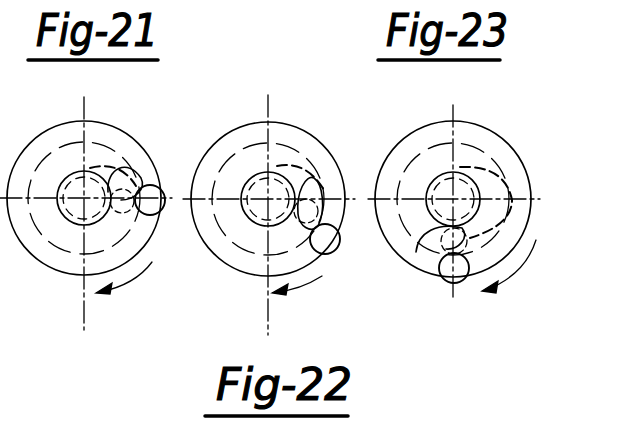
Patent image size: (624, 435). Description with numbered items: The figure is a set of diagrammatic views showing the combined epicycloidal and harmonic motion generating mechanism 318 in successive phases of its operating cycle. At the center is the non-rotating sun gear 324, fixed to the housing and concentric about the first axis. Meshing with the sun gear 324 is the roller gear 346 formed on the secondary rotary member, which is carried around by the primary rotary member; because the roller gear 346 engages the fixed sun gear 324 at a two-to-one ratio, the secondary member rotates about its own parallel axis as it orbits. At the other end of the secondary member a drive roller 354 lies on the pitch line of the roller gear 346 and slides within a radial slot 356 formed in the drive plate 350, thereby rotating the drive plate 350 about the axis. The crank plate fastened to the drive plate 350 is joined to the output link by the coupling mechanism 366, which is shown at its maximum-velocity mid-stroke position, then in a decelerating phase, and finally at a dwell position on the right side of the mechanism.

In FIG. 21, the combined epicycloidal and harmonic motion generating mechanism 318 is at (44, 108).
In FIG. 22, the combined epicycloidal and harmonic motion generating mechanism 318 is at (316, 114).
In FIG. 23, the combined epicycloidal and harmonic motion generating mechanism 318 is at (392, 97).
In FIG. 21, the sun gear 324 is at (55, 233).
In FIG. 22, the sun gear 324 is at (250, 174).
In FIG. 23, the sun gear 324 is at (458, 176).
In FIG. 21, the roller gear 346 is at (113, 170).
In FIG. 22, the roller gear 346 is at (314, 178).
In FIG. 23, the roller gear 346 is at (436, 234).
In FIG. 21, the drive plate 350 is at (70, 274).
In FIG. 22, the drive plate 350 is at (284, 124).
In FIG. 23, the drive plate 350 is at (460, 214).
In FIG. 21, the drive roller 354 is at (148, 186).
In FIG. 22, the drive roller 354 is at (312, 238).
In FIG. 23, the drive roller 354 is at (458, 226).
In FIG. 21, the radial slot 356 is at (123, 212).
In FIG. 22, the radial slot 356 is at (316, 224).
In FIG. 23, the radial slot 356 is at (454, 241).
In FIG. 21, the coupling mechanism 366 is at (163, 207).
In FIG. 22, the coupling mechanism 366 is at (339, 246).
In FIG. 23, the coupling mechanism 366 is at (466, 282).